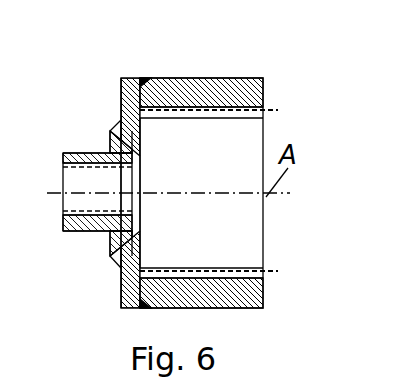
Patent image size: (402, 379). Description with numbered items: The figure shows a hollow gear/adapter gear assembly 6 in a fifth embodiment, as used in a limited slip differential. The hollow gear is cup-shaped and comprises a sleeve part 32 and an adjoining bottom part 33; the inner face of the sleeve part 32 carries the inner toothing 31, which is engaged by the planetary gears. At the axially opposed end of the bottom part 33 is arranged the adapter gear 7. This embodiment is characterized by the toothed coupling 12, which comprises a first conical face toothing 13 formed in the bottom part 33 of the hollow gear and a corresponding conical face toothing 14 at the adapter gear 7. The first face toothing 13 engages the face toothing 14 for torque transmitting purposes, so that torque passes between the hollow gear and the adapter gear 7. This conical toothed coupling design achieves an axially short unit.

The hollow gear/adapter gear assembly 6 is at (194, 56).
The adapter gear 7 is at (74, 143).
The toothed coupling 12 is at (102, 108).
The first conical face toothing 13 is at (139, 238).
The conical face toothing 14 is at (141, 158).
The inner toothing 31 is at (212, 116).
The sleeve part 32 is at (233, 97).
The bottom part 33 is at (131, 92).